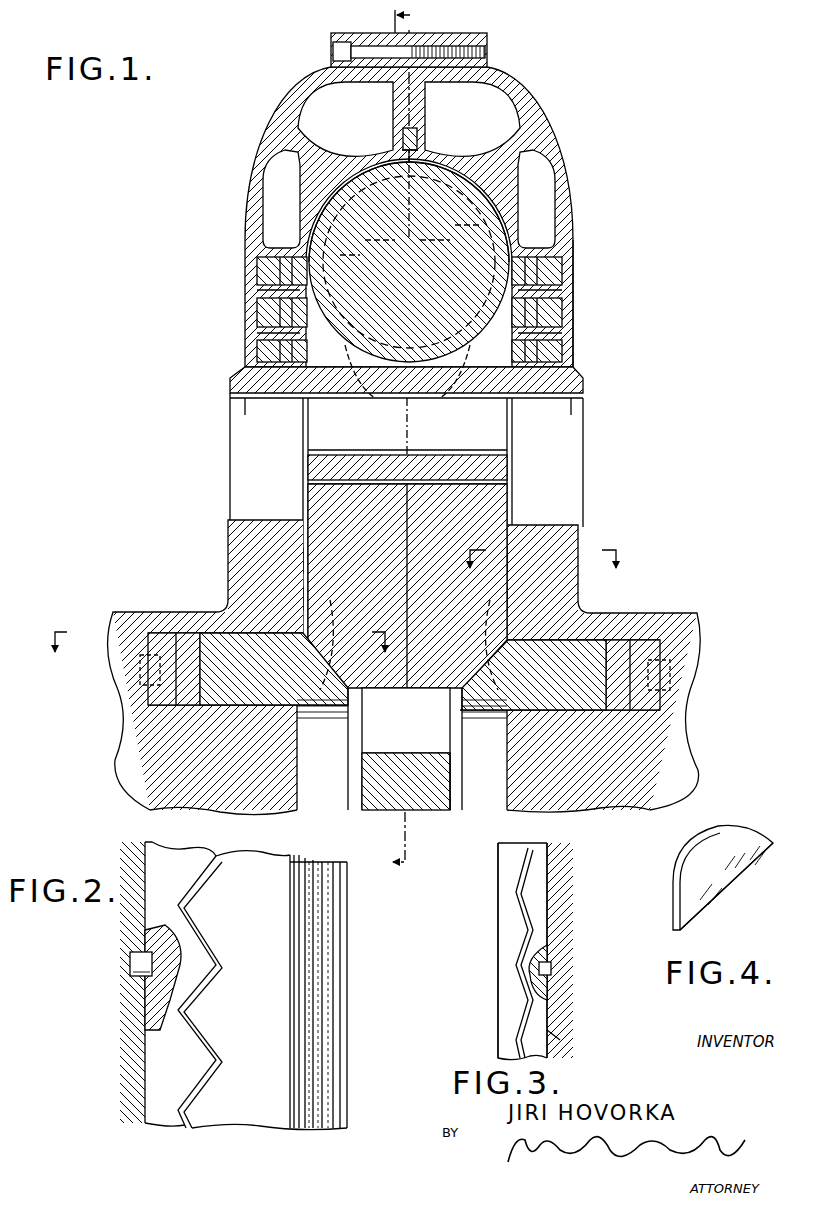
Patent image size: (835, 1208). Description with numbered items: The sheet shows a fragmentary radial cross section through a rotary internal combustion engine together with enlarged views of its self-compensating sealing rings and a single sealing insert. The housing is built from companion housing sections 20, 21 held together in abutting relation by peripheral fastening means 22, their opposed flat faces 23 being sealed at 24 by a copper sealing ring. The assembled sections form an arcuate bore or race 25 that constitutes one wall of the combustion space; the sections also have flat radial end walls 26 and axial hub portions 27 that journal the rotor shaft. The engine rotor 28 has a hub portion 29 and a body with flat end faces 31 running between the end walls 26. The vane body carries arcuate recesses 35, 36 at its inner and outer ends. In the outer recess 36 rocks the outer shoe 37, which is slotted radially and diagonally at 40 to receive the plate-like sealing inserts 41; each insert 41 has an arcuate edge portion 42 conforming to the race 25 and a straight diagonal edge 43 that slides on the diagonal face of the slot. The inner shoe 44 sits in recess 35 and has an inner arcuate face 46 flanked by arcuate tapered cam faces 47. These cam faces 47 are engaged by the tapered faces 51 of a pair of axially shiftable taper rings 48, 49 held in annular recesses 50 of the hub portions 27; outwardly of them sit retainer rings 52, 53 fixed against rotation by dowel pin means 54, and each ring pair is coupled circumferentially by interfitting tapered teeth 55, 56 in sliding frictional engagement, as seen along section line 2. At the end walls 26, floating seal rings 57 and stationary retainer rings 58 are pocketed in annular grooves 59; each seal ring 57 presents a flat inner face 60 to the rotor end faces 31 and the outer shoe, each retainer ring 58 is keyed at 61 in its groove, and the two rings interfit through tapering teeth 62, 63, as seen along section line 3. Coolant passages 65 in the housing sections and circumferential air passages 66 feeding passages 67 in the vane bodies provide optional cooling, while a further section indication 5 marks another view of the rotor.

In FIG. 1, the section line 2— 2 is at (221, 654).
In FIG. 1, the section line 3— 3 is at (540, 572).
In FIG. 1, the section line 5- 5 is at (403, 434).
In FIG. 1, the housing section 20 is at (250, 268).
In FIG. 1, the housing section 21 is at (568, 290).
In FIG. 1, the peripheral fastening means 22 is at (462, 58).
In FIG. 1, the flat faces 23 is at (415, 105).
In FIG. 1, the seal 24 is at (402, 140).
In FIG. 1, the bore or race 25 is at (425, 170).
In FIG. 1, the radial end walls 26 is at (232, 532).
In FIG. 3, the radial end walls 26 is at (555, 1057).
In FIG. 1, the axial hub portions 27 is at (140, 628).
In FIG. 2, the axial hub portions 27 is at (120, 872).
In FIG. 1, the engine rotor 28 is at (390, 796).
In FIG. 1, the hub portion 29 is at (430, 806).
In FIG. 1, the flat end faces 31 is at (303, 497).
In FIG. 1, the arcuate recess 35 is at (335, 476).
In FIG. 1, the arcuate recess 36 is at (350, 400).
In FIG. 1, the outer shoe 37 is at (470, 245).
In FIG. 1, the slot 40 is at (407, 381).
In FIG. 1, the sealing insert 41 is at (462, 195).
In FIG. 4, the sealing insert 41 is at (745, 850).
In FIG. 4, the arcuate edge portion 42 is at (707, 830).
In FIG. 4, the straight diagonal edge 43 is at (736, 880).
In FIG. 1, the inner shoe 44 is at (389, 556).
In FIG. 1, the inner arcuate face 46 is at (406, 720).
In FIG. 1, the arcuate tapered cam faces 47 is at (326, 682).
In FIG. 1, the taper ring 48 is at (305, 700).
In FIG. 2, the taper ring 48 is at (262, 1105).
In FIG. 1, the taper ring 49 is at (496, 700).
In FIG. 1, the annular recesses 50 is at (226, 778).
In FIG. 1, the tapered faces 51 is at (330, 712).
In FIG. 2, the tapered faces 51 is at (332, 932).
In FIG. 1, the retainer ring 52 is at (162, 724).
In FIG. 2, the retainer ring 52 is at (160, 1080).
In FIG. 1, the retainer ring 53 is at (645, 700).
In FIG. 1, the dowel pin means 54 is at (150, 668).
In FIG. 2, the dowel pin means 54 is at (130, 966).
In FIG. 2, the tapered teeth 55 is at (198, 1044).
In FIG. 2, the tapered teeth 56 is at (160, 932).
In FIG. 1, the floating seal ring 57 is at (300, 318).
In FIG. 3, the floating seal ring 57 is at (512, 935).
In FIG. 1, the stationary retainer ring 58 is at (560, 318).
In FIG. 3, the stationary retainer ring 58 is at (550, 915).
In FIG. 1, the annular groove 59 is at (560, 350).
In FIG. 3, the annular groove 59 is at (552, 1038).
In FIG. 1, the flat inner face 60 is at (322, 372).
In FIG. 3, the flat inner face 60 is at (498, 915).
In FIG. 3, the key 61 is at (551, 968).
In FIG. 3, the tapering teeth 62 is at (525, 1006).
In FIG. 3, the tapering teeth 63 is at (530, 1036).
In FIG. 1, the coolant passages 65 is at (276, 176).
In FIG. 1, the air passages 66 is at (240, 446).
In FIG. 1, the passages 67 is at (320, 434).